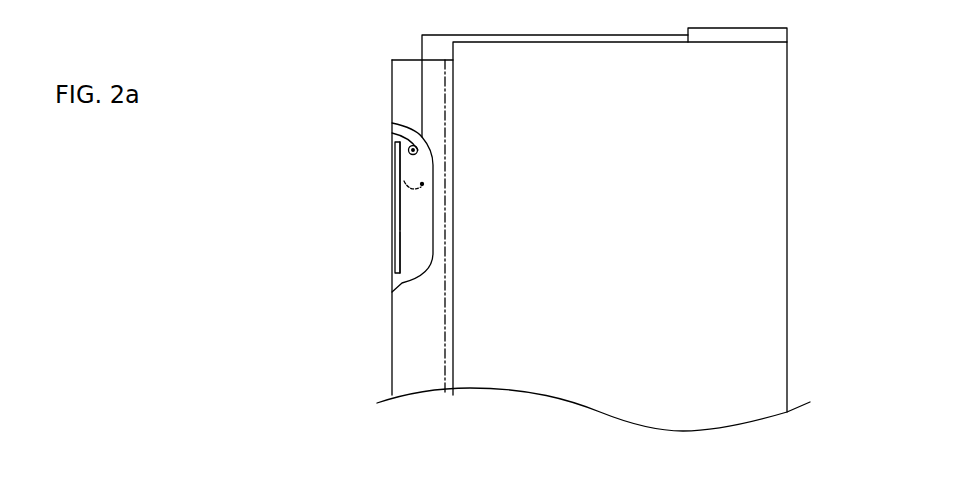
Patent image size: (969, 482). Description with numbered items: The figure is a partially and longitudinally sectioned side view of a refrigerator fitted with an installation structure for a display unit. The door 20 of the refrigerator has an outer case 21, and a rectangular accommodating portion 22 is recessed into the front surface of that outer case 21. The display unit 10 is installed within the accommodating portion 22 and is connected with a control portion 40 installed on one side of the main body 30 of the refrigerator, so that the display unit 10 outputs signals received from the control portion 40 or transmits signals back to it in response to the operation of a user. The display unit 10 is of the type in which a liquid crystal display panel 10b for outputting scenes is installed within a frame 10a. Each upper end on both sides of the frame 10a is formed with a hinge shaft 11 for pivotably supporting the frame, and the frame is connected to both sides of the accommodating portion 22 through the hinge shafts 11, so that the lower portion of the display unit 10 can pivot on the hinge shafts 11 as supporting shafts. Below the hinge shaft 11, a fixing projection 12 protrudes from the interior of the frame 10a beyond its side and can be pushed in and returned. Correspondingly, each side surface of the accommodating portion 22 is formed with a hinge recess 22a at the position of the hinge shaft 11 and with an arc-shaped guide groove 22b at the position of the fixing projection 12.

The display unit 10 is at (383, 172).
The frame 10a is at (398, 262).
The liquid crystal display panel 10b is at (398, 228).
The hinge shaft 11 is at (424, 147).
The fixing projection 12 is at (422, 184).
The door 20 is at (393, 396).
The outer case 21 is at (390, 372).
The accommodating portion 22 is at (393, 288).
The hinge recess 22a is at (407, 150).
The guide groove 22b is at (405, 196).
The main body 30 is at (780, 132).
The control portion 40 is at (787, 38).